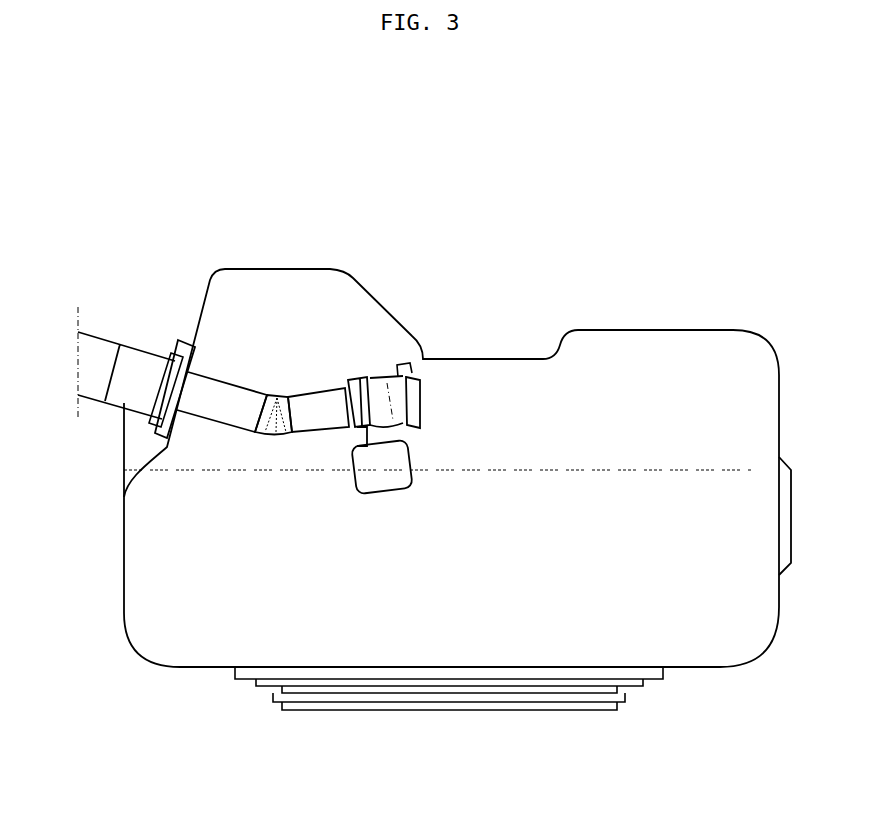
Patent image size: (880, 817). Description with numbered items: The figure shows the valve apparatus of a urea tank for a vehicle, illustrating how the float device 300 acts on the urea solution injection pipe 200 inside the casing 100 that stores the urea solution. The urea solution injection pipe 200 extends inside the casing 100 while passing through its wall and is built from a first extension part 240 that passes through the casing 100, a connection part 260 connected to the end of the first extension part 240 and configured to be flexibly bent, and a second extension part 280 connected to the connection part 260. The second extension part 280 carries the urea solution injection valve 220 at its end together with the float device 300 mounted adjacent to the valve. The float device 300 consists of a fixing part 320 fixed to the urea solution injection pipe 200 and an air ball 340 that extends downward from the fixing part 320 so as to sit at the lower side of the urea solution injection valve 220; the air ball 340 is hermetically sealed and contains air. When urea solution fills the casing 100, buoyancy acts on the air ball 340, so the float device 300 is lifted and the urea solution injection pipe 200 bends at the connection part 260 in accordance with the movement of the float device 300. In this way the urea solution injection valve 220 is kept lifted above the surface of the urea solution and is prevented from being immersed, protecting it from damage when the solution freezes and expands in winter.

The casing 100 is at (732, 347).
The urea solution injection pipe 200 is at (302, 306).
The urea solution injection valve 220 is at (360, 372).
The first extension part 240 is at (217, 397).
The connection part 260 is at (282, 400).
The second extension part 280 is at (297, 407).
The float device 300 is at (387, 495).
The fixing part 320 is at (360, 400).
The air ball 340 is at (363, 470).